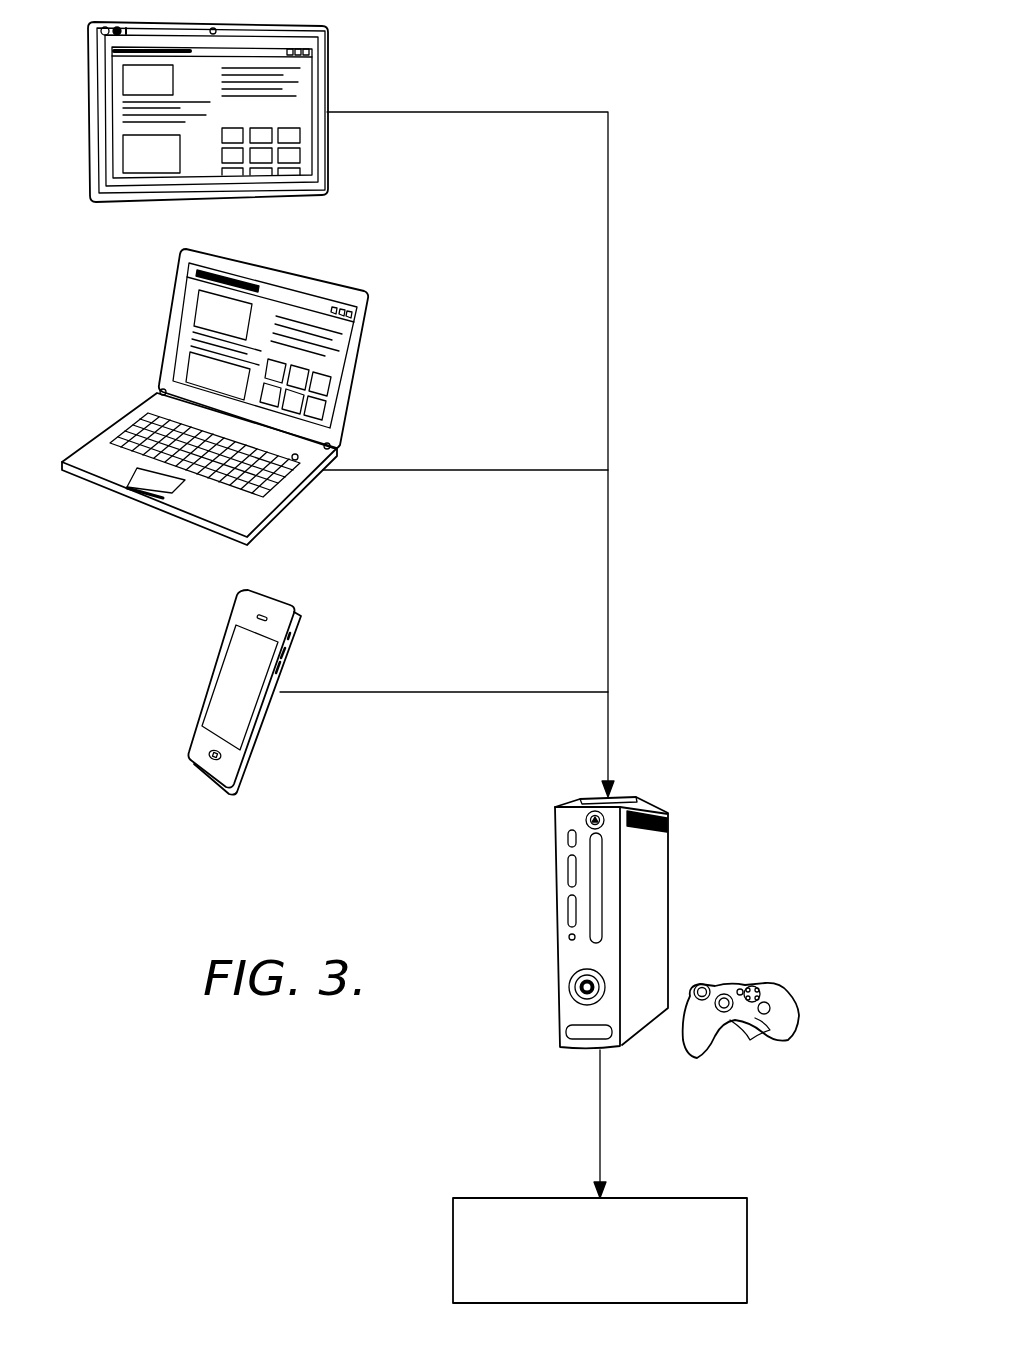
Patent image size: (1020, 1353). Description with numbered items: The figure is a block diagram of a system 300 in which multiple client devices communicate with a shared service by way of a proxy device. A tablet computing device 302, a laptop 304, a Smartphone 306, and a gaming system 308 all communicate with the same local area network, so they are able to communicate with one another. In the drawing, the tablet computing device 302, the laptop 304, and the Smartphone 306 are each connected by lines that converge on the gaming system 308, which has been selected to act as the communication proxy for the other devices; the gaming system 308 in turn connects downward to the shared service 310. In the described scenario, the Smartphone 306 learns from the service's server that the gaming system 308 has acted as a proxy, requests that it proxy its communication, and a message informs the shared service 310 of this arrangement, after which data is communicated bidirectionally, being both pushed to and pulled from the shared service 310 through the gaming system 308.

The system 300 is at (692, 78).
The tablet computing device 302 is at (268, 23).
The laptop 304 is at (306, 278).
The Smartphone 306 is at (282, 600).
The gaming system 308 is at (654, 802).
The shared service 310 is at (696, 1197).